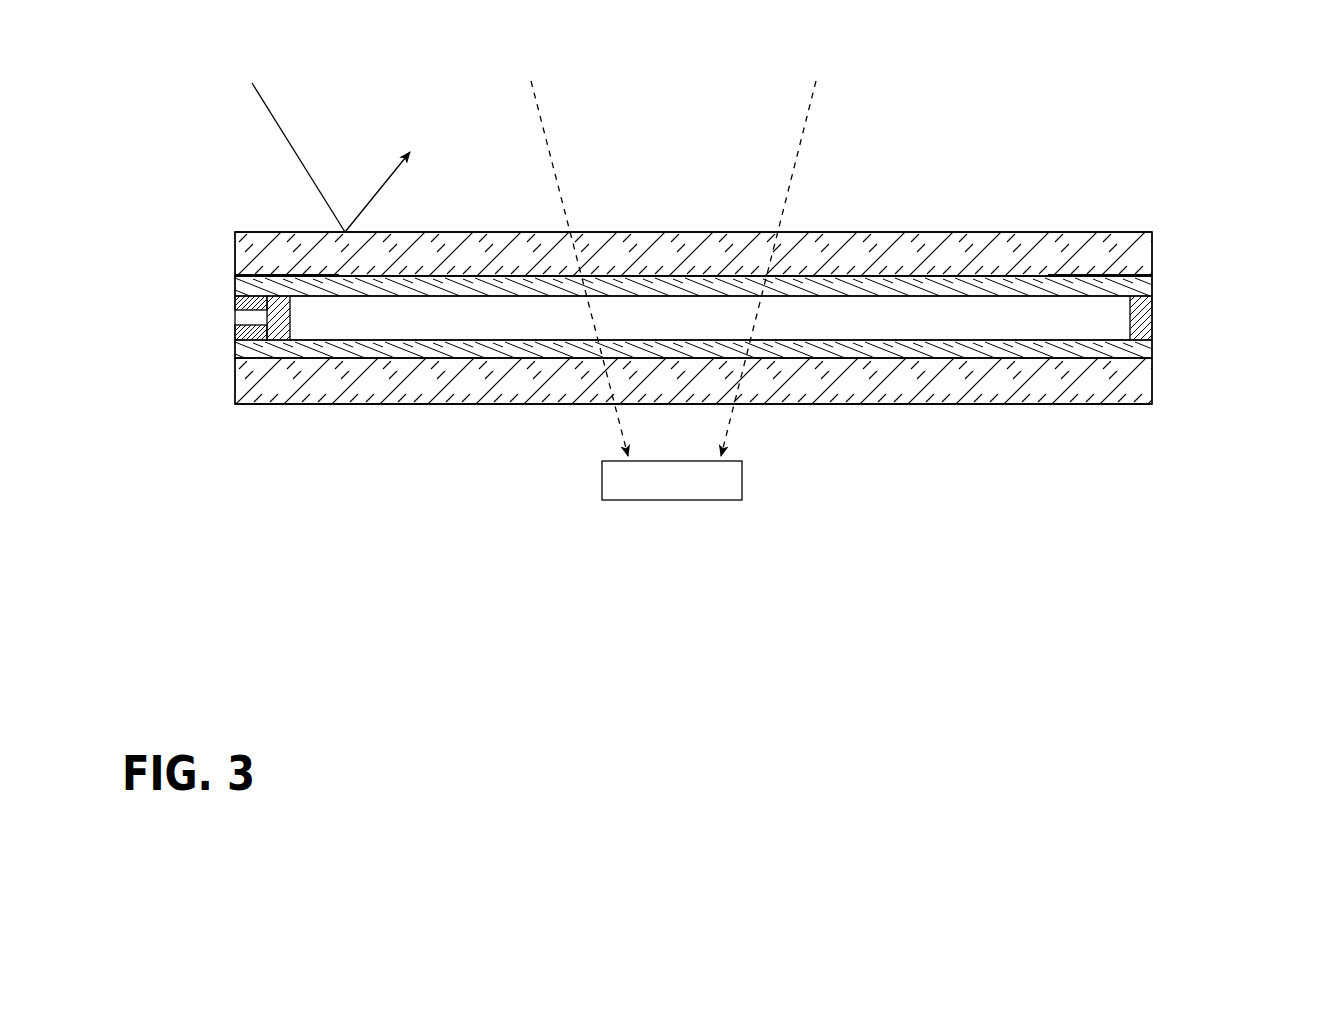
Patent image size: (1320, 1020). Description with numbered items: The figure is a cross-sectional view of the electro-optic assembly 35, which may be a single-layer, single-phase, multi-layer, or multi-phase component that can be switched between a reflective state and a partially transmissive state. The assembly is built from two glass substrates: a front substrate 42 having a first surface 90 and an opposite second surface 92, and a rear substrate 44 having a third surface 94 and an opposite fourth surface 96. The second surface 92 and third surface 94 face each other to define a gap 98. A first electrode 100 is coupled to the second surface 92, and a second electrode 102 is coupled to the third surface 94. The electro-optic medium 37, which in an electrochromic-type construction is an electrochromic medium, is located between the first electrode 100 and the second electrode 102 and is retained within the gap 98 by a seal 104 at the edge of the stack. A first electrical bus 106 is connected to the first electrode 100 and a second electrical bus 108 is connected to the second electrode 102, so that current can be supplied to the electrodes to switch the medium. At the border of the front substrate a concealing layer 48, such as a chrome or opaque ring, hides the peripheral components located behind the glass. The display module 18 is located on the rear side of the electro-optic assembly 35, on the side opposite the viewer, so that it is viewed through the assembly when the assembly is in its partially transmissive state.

The electro-optic assembly 35 is at (1142, 212).
The front substrate 42 is at (235, 255).
The rear substrate 44 is at (1130, 383).
The concealing layer 48 is at (293, 274).
The first surface 90 is at (905, 232).
The second surface 92 is at (918, 282).
The first electrode 100 is at (1140, 285).
The second electrode 102 is at (1142, 350).
The seal 104 is at (267, 318).
The first electrical bus 106 is at (235, 303).
The second electrical bus 108 is at (235, 333).
The electro-optic medium 37 is at (710, 318).
The third surface 94 is at (1152, 358).
The fourth surface 96 is at (880, 404).
The gap 98 is at (418, 315).
The display module 18 is at (672, 480).